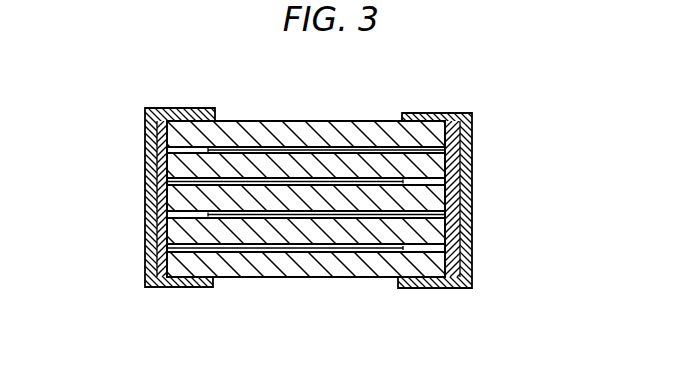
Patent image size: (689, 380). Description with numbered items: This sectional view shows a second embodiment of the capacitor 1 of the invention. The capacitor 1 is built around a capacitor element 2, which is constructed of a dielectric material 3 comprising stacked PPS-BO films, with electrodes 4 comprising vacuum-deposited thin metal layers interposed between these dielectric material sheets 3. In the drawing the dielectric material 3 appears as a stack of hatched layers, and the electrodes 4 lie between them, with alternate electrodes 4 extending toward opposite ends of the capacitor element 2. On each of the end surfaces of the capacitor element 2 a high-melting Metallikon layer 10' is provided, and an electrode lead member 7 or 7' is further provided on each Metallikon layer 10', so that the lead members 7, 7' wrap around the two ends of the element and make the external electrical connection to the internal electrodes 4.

The capacitor 1 is at (481, 160).
The capacitor element 2 is at (300, 276).
The dielectric material 3 is at (315, 130).
The electrodes 4 is at (372, 148).
The electrode lead member 7 is at (195, 197).
The electrode lead member 7' is at (433, 200).
The high-melting Metallikon layer 10' is at (307, 199).